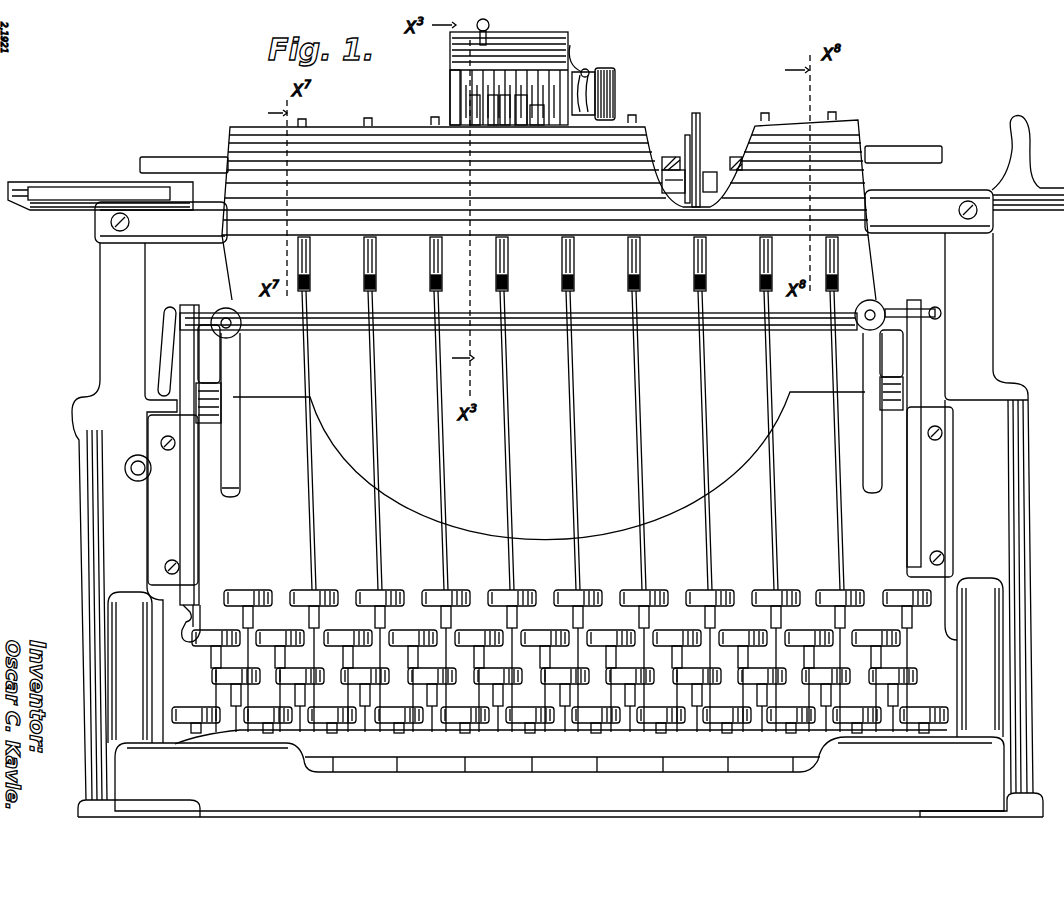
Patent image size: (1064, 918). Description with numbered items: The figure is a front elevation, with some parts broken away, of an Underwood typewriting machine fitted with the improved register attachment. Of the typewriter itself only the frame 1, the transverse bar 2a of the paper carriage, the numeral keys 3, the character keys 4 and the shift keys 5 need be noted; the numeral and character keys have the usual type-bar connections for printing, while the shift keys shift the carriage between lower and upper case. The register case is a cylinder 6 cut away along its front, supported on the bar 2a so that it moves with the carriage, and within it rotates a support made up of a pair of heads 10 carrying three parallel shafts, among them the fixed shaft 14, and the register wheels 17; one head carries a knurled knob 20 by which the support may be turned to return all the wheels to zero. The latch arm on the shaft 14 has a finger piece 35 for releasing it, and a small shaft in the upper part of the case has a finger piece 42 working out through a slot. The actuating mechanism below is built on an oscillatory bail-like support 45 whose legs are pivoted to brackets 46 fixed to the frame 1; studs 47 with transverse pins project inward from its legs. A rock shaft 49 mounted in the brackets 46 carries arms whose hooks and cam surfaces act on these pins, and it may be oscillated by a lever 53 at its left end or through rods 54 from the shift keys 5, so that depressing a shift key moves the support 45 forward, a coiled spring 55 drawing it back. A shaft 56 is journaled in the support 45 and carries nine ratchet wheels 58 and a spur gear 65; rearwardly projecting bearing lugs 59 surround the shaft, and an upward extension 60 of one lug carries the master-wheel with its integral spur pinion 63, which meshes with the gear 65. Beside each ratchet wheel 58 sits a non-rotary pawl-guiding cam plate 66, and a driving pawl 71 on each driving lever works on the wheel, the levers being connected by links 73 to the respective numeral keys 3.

The frame 1 is at (103, 543).
The transverse bar 2a is at (927, 150).
The numeral keys 3 is at (822, 588).
The character keys 4 is at (794, 707).
The shift keys 5 is at (932, 705).
The cylindrical case 6 is at (560, 40).
The heads 10 is at (450, 98).
The shaft 14 is at (540, 125).
The register wheels 17 is at (476, 125).
The knurled knob 20 is at (615, 92).
The finger piece 35 is at (588, 68).
The finger piece 42 is at (490, 25).
The oscillatory support 45 is at (865, 148).
The brackets 46 is at (870, 520).
The studs 47 is at (238, 333).
The rock shaft 49 is at (350, 333).
The lever 53 is at (160, 378).
The rods 54 is at (204, 600).
The coiled spring 55 is at (932, 307).
The shaft 56 is at (717, 155).
The ratchet wheels 58 is at (700, 135).
The bearing lugs 59 is at (660, 165).
The upward extension 60 is at (520, 125).
The spur pinion 63 is at (505, 125).
The spur gear 65 is at (494, 125).
The cam plate 66 is at (685, 150).
The driving pawl 71 is at (695, 124).
The links 73 is at (725, 300).